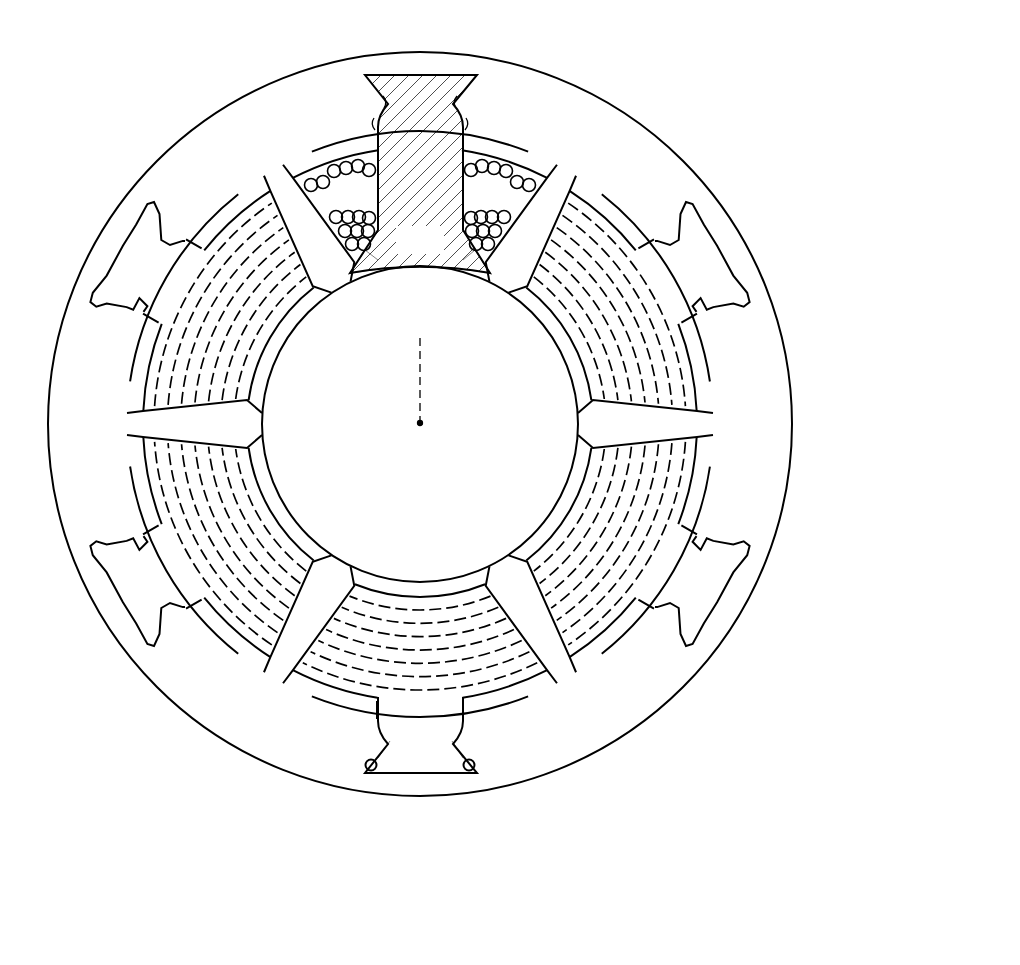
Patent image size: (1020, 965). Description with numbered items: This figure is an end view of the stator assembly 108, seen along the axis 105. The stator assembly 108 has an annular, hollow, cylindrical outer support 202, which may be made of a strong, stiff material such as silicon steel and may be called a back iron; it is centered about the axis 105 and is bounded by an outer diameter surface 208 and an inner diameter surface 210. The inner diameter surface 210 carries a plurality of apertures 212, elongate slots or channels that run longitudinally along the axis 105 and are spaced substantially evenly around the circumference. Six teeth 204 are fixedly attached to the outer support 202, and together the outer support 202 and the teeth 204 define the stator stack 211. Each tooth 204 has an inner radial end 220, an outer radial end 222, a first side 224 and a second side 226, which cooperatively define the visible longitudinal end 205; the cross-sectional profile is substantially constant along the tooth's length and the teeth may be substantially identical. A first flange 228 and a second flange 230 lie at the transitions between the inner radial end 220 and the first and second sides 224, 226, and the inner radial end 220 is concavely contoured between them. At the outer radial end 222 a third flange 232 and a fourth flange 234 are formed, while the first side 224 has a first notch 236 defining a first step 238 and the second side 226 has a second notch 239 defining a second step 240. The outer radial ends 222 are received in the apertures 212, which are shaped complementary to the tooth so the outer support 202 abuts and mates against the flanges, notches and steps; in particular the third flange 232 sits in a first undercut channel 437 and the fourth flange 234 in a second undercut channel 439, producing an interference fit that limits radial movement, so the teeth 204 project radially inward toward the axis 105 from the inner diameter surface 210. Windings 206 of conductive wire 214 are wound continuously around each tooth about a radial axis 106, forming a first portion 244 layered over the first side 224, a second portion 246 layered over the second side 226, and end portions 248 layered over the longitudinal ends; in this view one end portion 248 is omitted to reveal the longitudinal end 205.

The axis 105 is at (424, 425).
The radial axis 106 is at (424, 376).
The stator assembly 108 is at (120, 114).
The outer support 202 is at (569, 93).
The teeth 204 is at (458, 180).
The longitudinal end 205 is at (398, 250).
The windings 206 is at (230, 248).
The outer diameter surface 208 is at (794, 412).
The inner diameter surface 210 is at (712, 415).
The stator stack 211 is at (697, 655).
The apertures 212 is at (419, 424).
The conductive wire 214 is at (310, 178).
The inner radial end 220 is at (410, 269).
The outer radial end 222 is at (410, 73).
The first side 224 is at (374, 149).
The second side 226 is at (462, 208).
The first flange 228 is at (352, 276).
The second flange 230 is at (488, 276).
The third flange 232 is at (364, 77).
The fourth flange 234 is at (478, 77).
The first notch 236 is at (380, 106).
The first step 238 is at (378, 125).
The second notch 239 is at (460, 106).
The second step 240 is at (463, 125).
The first portion 244 is at (322, 208).
The second portion 246 is at (468, 208).
The end portions 248 is at (198, 326).
The first undercut channel 437 is at (469, 770).
The second undercut channel 439 is at (372, 770).